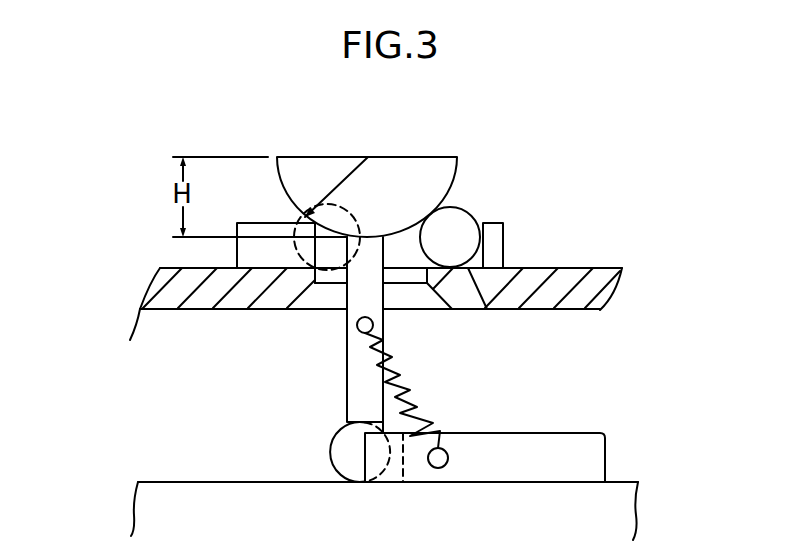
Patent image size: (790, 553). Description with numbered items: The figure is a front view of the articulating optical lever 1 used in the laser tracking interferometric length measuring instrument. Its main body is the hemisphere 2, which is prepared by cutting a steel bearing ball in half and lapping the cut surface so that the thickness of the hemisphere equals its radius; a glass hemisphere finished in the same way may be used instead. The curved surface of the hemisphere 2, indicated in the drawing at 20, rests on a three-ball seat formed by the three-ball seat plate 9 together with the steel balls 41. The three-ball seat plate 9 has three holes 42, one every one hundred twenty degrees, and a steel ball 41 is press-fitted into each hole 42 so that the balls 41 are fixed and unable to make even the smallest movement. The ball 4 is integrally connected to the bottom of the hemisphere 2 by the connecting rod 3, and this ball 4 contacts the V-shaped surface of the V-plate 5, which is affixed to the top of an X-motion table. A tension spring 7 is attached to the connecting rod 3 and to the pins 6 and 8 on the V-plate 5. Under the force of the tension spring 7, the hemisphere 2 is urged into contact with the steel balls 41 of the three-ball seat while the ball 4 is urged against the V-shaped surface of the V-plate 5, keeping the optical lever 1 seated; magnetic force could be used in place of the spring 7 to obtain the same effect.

The articulating optical lever 1 is at (472, 157).
The hemisphere 2 is at (418, 162).
The spherical contact surface 20 is at (368, 157).
The connecting rod 3 is at (347, 385).
The ball 4 is at (347, 452).
The V-plate 5 is at (548, 432).
The pin 6 is at (372, 323).
The tension spring 7 is at (420, 397).
The pin 8 is at (448, 452).
The three-ball seat plate 9 is at (498, 240).
The steel ball 41 is at (460, 223).
The hole 42 is at (482, 302).